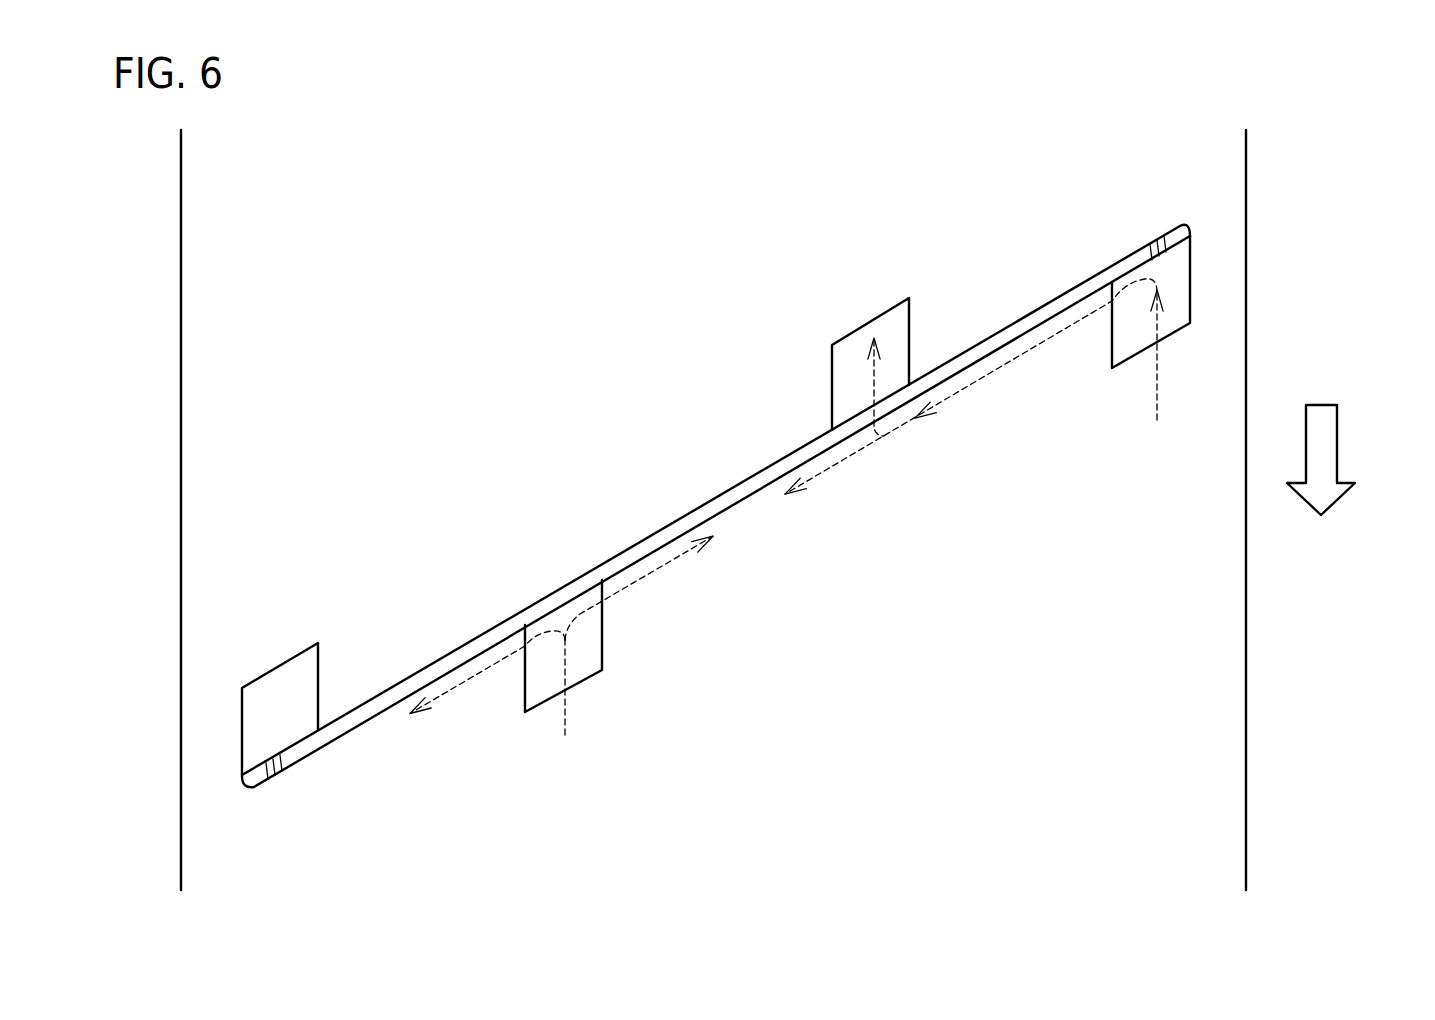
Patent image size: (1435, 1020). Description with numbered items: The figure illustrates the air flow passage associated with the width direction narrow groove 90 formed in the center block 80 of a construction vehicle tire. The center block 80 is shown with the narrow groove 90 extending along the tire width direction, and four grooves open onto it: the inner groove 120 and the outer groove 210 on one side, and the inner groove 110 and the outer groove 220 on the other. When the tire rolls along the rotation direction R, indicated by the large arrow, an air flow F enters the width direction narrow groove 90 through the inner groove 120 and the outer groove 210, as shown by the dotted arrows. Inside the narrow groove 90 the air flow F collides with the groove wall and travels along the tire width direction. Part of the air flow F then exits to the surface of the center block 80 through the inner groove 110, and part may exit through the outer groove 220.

The center block 80 is at (982, 228).
The width direction narrow groove 90 is at (763, 492).
The inner groove 110 is at (897, 322).
The inner groove 120 is at (585, 645).
The outer groove 210 is at (1173, 290).
The outer groove 220 is at (280, 688).
The air flow F is at (860, 529).
The rotation direction R is at (1327, 443).